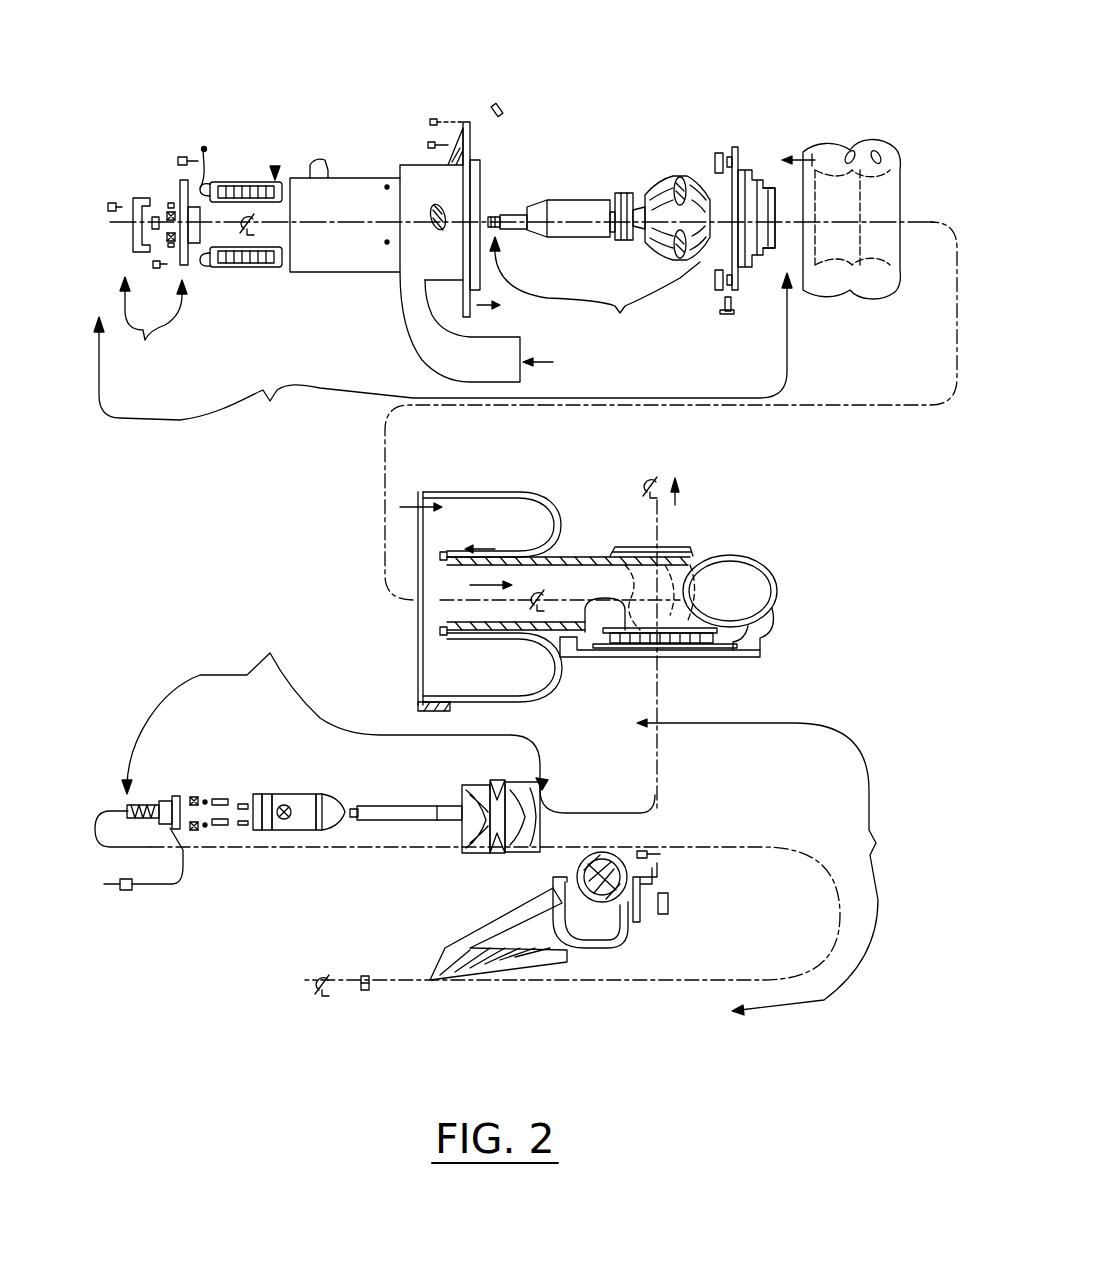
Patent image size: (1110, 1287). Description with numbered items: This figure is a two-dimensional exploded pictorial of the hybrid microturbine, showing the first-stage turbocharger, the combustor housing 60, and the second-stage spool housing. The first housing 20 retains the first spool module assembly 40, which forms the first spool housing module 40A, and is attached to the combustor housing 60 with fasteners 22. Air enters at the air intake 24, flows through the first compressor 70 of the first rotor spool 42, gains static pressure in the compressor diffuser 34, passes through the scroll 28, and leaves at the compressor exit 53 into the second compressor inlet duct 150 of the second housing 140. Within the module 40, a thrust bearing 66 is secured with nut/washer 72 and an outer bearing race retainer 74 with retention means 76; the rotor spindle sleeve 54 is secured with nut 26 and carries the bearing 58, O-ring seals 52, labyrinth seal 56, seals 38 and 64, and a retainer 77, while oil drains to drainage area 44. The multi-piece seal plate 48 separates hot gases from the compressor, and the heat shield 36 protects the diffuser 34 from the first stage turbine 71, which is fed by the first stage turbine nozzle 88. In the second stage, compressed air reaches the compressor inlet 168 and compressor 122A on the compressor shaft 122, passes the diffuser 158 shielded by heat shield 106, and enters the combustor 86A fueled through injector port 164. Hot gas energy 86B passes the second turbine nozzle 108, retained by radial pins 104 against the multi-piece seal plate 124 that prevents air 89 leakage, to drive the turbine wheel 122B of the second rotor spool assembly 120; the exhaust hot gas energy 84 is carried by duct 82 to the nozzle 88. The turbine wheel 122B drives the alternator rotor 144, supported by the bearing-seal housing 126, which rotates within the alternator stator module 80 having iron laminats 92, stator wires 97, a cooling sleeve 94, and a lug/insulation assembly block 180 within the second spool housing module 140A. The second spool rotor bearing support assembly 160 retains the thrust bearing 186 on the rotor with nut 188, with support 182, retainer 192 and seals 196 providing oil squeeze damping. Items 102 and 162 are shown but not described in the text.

The #1 housing 20 is at (440, 947).
The fasteners 22 is at (648, 853).
The air intake 24 is at (487, 920).
The nut 26 is at (365, 1000).
The scroll 28 is at (650, 823).
The compressor diffuser 34 is at (647, 905).
The case insulation insert / heat shield 36 is at (670, 902).
The seals 38 is at (193, 790).
The 1st spool module assembly 40 is at (388, 717).
The #1 spool housing module 40A is at (778, 867).
The 1st rotor spool 42 is at (437, 840).
The drainage area 44 is at (280, 827).
The multi-piece seal plate 48 is at (500, 777).
The seals / O-rings 52 is at (268, 795).
The compressor exit 53 is at (550, 371).
The rotor spindle sleeve 54 is at (300, 800).
The labyrinth seal 56 is at (253, 800).
The bearing 58 is at (223, 830).
The combustor housing 60 is at (533, 490).
The seals 64 is at (227, 795).
The thrust bearing 66 is at (193, 832).
The 1st compressor 70 is at (470, 787).
The 1st stage turbine 71 is at (545, 782).
The nut/washer 72 is at (127, 893).
The outer bearing race retainer 74 is at (177, 825).
The retention means 76 is at (168, 795).
The retainer 77 is at (207, 833).
The alternator stator module 80 is at (275, 168).
The duct 82 is at (532, 585).
The hot gas energy 84 is at (480, 582).
The combustor 86A is at (840, 297).
The hot gas energy 86B is at (820, 157).
The 1st stage turbine nozzle 88 is at (705, 660).
The air 89 is at (482, 548).
The iron laminats 92 is at (222, 270).
The cooling sleeve 94 is at (262, 270).
The stator wires 97 is at (206, 150).
The nut 102 is at (773, 163).
The radial pins 104 is at (500, 108).
The heat shield 106 is at (717, 293).
The #2 turbine nozzle 108 is at (747, 280).
The 2nd rotor spool assembly 120 is at (595, 296).
The compressor shaft 122 is at (440, 815).
The compressor 122A is at (673, 177).
The turbine wheel 122B is at (720, 150).
The multi-piece seal plate 124 is at (680, 187).
The bearing-seal housing 126 is at (628, 193).
The #2 housing 140 is at (337, 263).
The #2 spool housing module 140A is at (443, 355).
The alternator rotor 144 is at (567, 207).
The 2nd compressor inlet duct 150 is at (420, 336).
The diffuser 158 is at (477, 167).
The 2nd spool rotor bearing support assembly 160 is at (153, 324).
The screw 162 is at (440, 122).
The fuel supply / injector port 164 is at (428, 147).
The compressor inlet 168 is at (640, 247).
The lug/insulation assembly block 180 is at (328, 160).
The support 182 is at (191, 270).
The thrust bearing 186 is at (153, 208).
The nut 188 is at (138, 207).
The retainer 192 is at (133, 243).
The seals 196 is at (170, 195).